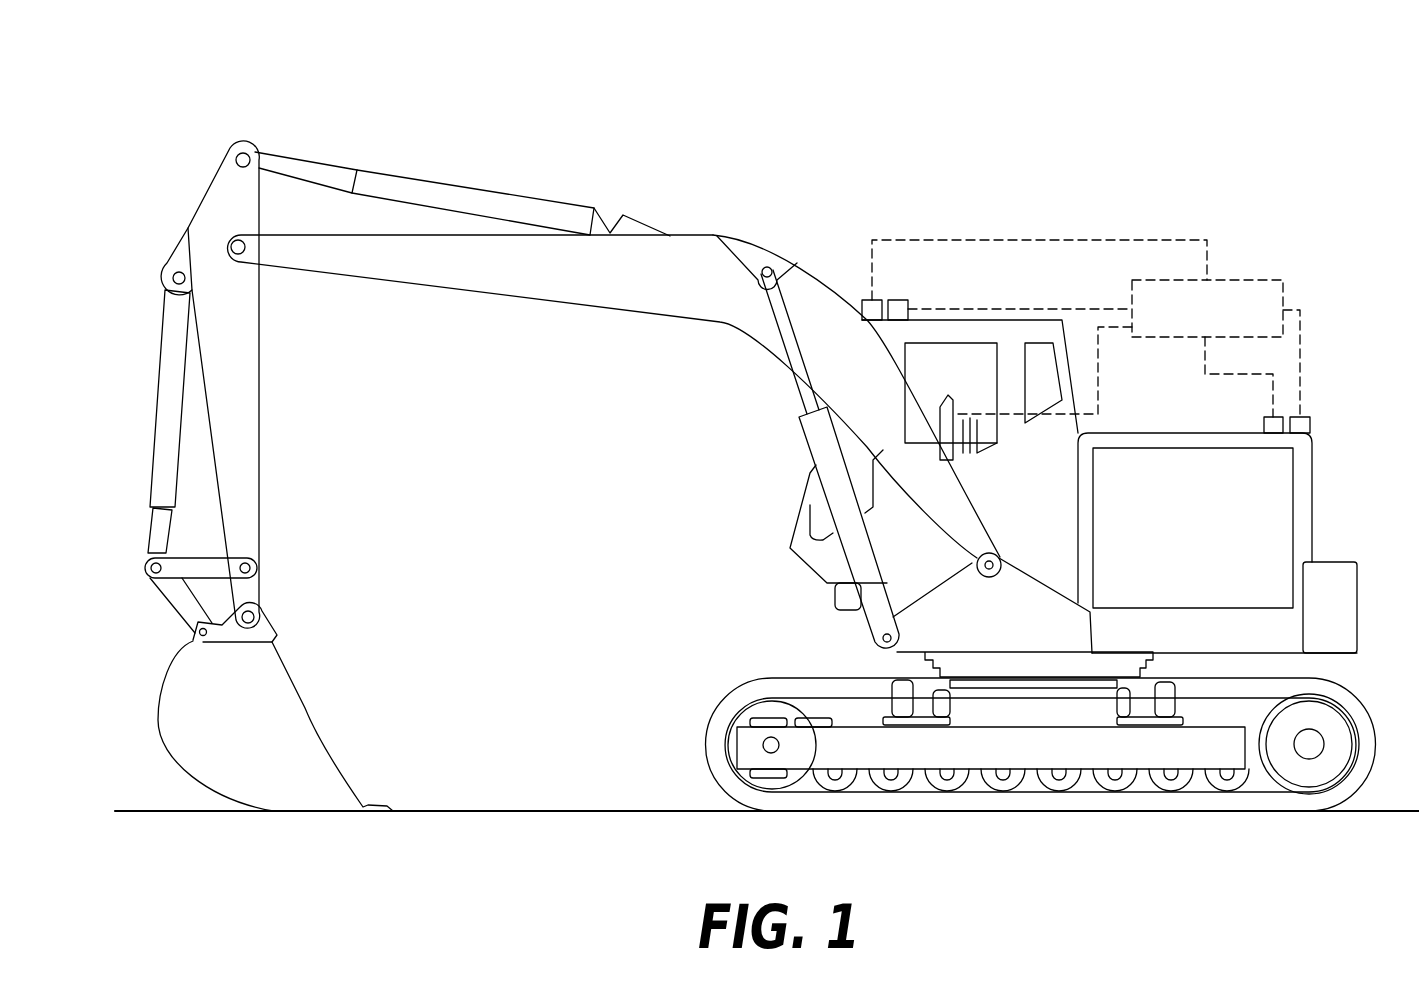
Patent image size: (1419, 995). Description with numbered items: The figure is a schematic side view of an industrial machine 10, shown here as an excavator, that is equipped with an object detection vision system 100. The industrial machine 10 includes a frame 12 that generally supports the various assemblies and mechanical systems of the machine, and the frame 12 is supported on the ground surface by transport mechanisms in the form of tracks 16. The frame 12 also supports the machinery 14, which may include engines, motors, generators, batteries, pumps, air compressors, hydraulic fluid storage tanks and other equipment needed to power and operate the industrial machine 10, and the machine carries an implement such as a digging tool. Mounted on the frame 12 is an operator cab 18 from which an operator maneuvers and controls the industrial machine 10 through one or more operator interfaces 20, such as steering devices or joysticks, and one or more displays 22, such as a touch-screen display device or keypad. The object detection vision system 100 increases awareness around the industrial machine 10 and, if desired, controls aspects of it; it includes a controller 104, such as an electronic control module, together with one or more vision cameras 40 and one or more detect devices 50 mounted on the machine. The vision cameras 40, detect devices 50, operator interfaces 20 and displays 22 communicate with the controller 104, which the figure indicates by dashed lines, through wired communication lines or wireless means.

The industrial machine 10 is at (572, 95).
The frame 12 is at (845, 595).
The machinery 14 is at (1318, 488).
The tracks 16 is at (1350, 693).
The operator cab 18 is at (803, 497).
The operator interfaces 20 is at (938, 398).
The displays 22 is at (965, 410).
The vision cameras 40 is at (870, 300).
The detect devices 50 is at (897, 300).
The object detection vision system 100 is at (1297, 158).
The controller 104 is at (1232, 280).